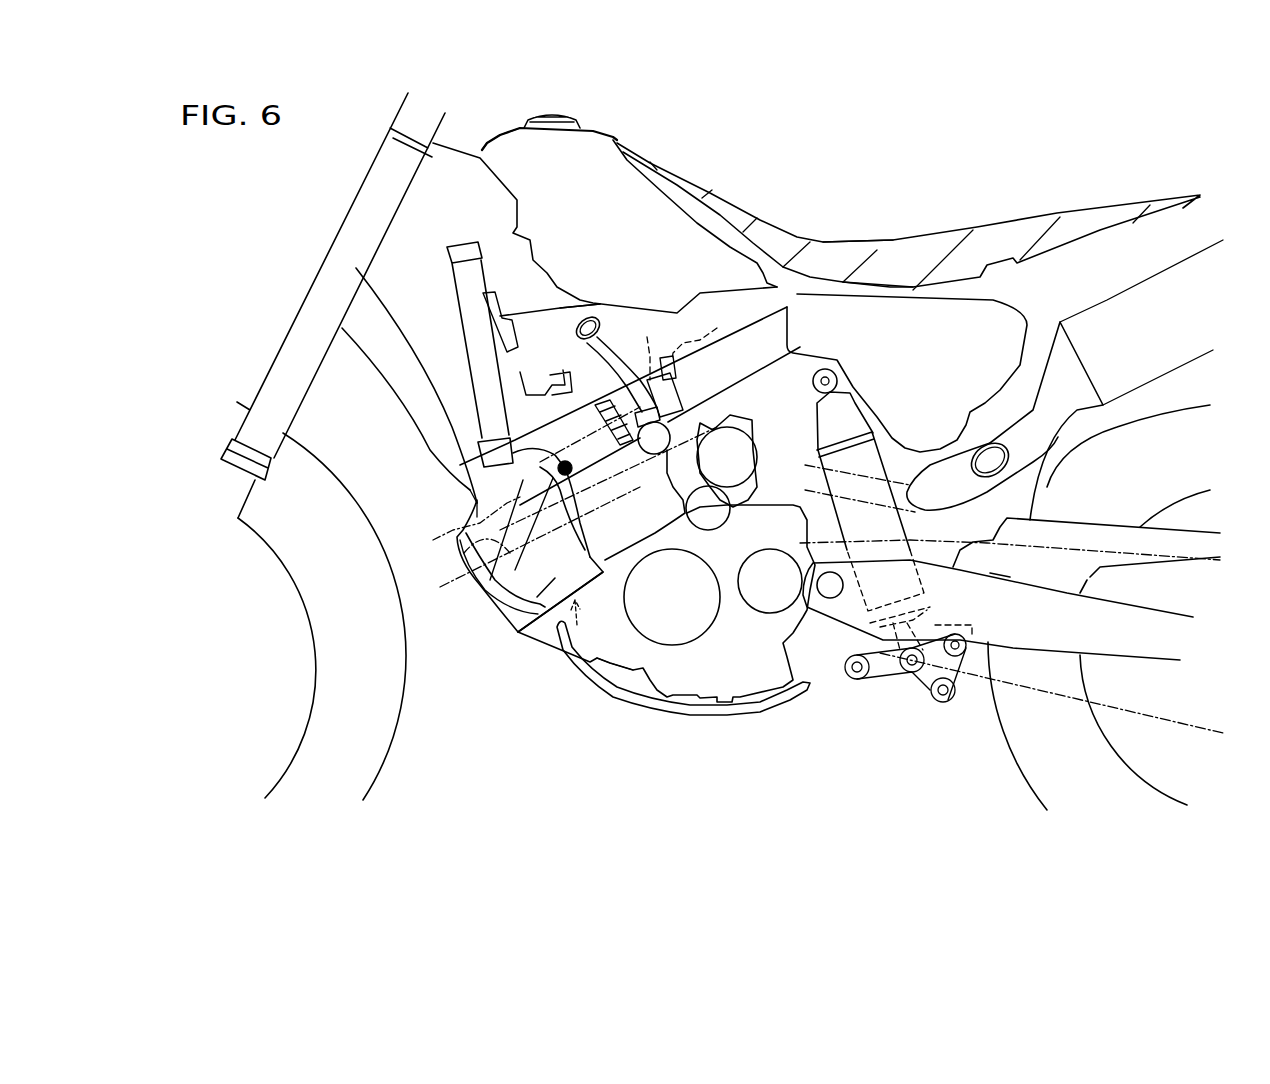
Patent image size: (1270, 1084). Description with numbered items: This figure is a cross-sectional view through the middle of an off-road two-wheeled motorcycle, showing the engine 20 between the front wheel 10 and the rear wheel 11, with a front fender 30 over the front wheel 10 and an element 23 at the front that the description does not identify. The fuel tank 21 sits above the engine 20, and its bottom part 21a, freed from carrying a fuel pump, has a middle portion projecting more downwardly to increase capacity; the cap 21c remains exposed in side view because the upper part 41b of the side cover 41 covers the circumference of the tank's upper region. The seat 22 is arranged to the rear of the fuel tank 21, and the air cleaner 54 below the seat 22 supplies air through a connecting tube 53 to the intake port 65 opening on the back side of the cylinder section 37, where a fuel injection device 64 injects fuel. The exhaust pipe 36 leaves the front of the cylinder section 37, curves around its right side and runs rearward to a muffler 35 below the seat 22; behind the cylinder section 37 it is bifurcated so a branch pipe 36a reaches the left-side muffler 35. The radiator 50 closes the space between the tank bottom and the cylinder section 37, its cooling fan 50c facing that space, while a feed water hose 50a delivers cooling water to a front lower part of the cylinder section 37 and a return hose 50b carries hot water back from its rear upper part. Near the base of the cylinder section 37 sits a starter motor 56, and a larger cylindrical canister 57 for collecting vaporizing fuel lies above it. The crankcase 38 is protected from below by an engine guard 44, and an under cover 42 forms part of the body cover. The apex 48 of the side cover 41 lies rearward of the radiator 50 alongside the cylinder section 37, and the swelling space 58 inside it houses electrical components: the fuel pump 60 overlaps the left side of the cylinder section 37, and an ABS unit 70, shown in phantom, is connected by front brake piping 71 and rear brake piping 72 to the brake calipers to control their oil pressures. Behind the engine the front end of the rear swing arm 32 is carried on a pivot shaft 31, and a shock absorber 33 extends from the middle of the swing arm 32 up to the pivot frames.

The front wheel 10 is at (363, 752).
The rear wheel 11 is at (1030, 775).
The engine 20 is at (653, 663).
The fuel tank 21 is at (717, 230).
The bottom part of the fuel tank 21a is at (595, 305).
The cap 21c is at (557, 116).
The seat 22 is at (938, 242).
The front fork 23 is at (308, 320).
The front fender 30 is at (373, 355).
The pivot shaft 31 is at (830, 590).
The rear swing arm 32 is at (1022, 635).
The shock absorber 33 is at (880, 522).
The muffler 35 is at (1167, 293).
The exhaust pipe 36 is at (497, 632).
The branch pipe 36a is at (972, 478).
The cylinder section 37 is at (500, 425).
The crankcase 38 is at (648, 663).
The side cover 41 is at (510, 131).
The upper part of the side cover 41b is at (487, 140).
The under cover 42 is at (567, 643).
The engine guard 44 is at (697, 715).
The apex 48 is at (553, 493).
The radiator 50 is at (483, 385).
The feed water hose 50a is at (477, 495).
The return hose 50b is at (617, 350).
The cooling fan 50c is at (507, 313).
The connecting tube 53 is at (720, 363).
The air cleaner 54 is at (878, 312).
The starter motor 56 is at (765, 470).
The canister 57 is at (737, 437).
The swelling space 58 is at (477, 505).
The fuel pump 60 is at (603, 373).
The fuel injection device 64 is at (707, 329).
The intake port 65 is at (659, 382).
The ABS unit 70 is at (587, 657).
The front brake piping 71 is at (467, 537).
The rear brake piping 72 is at (497, 577).